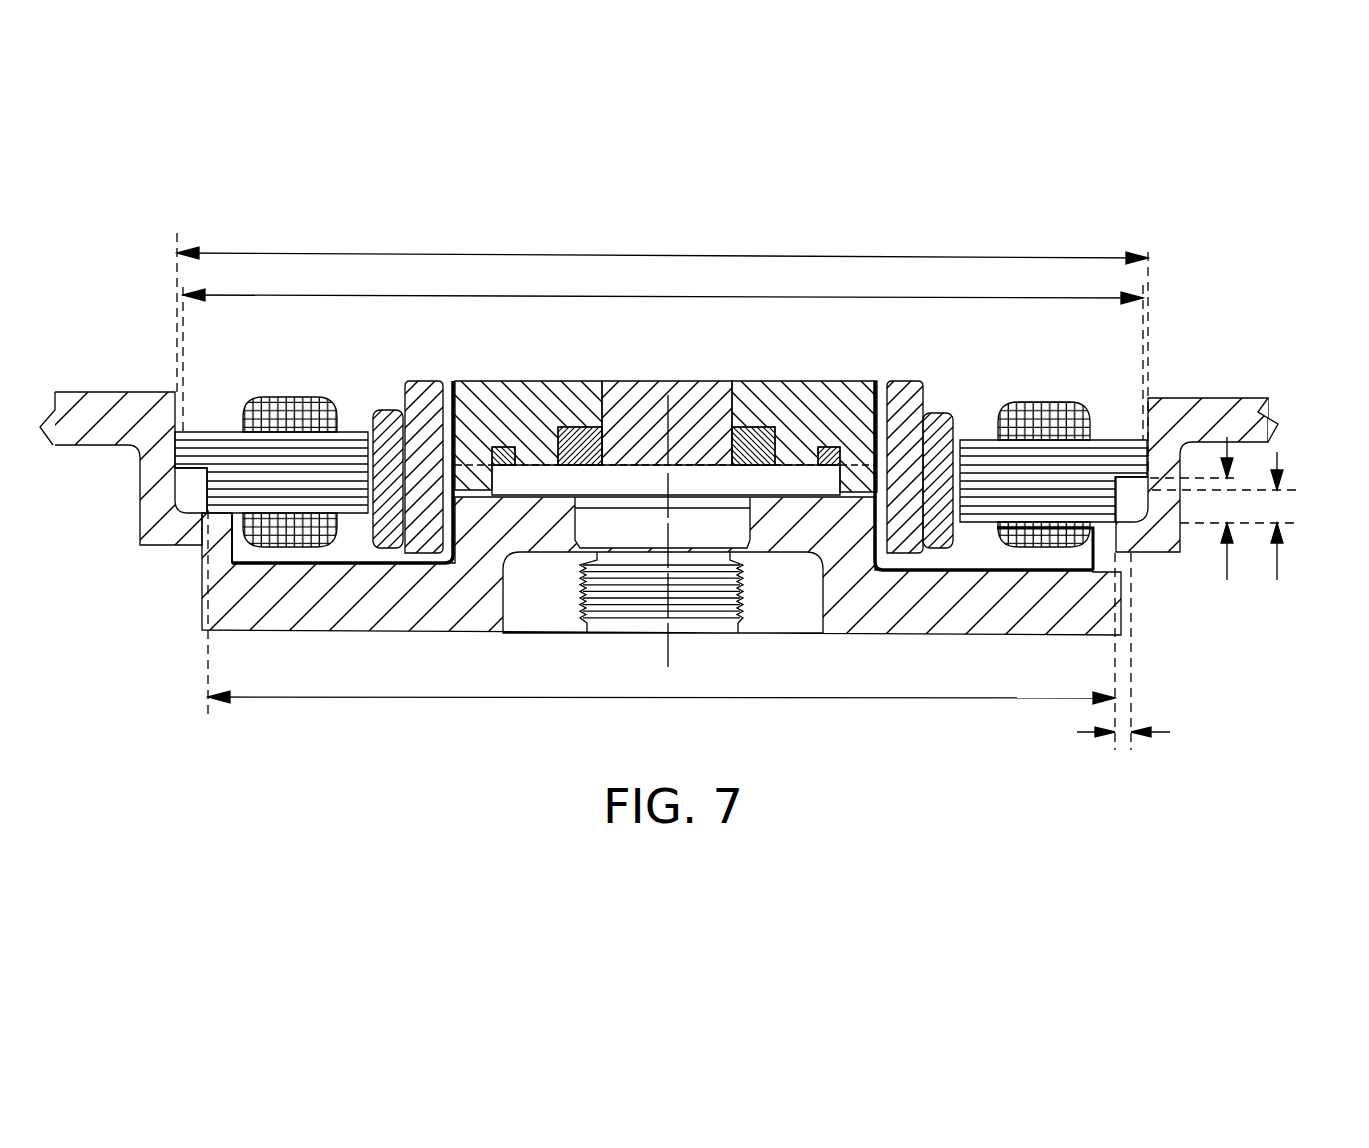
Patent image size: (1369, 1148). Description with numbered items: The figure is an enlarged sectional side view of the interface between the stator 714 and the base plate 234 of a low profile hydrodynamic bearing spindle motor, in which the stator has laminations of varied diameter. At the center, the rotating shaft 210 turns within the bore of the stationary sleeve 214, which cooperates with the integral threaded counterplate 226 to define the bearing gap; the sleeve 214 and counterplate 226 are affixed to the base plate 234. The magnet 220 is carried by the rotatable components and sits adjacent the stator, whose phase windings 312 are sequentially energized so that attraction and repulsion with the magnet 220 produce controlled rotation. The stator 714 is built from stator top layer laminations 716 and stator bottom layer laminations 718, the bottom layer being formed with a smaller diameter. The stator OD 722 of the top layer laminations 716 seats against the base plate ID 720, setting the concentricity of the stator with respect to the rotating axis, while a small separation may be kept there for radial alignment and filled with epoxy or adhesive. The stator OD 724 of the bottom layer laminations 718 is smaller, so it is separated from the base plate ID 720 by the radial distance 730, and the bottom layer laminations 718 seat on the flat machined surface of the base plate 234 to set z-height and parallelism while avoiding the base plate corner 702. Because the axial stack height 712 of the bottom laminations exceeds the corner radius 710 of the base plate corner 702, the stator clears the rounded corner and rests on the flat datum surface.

The base plate corner 702 is at (1143, 530).
The stator top layer laminations 716 is at (1138, 457).
The base plate 234 is at (946, 614).
The stator bottom layer laminations 718 is at (1093, 530).
The stator 714 is at (292, 381).
The phase windings 312 is at (1033, 410).
The magnet 220 is at (937, 413).
The sleeve 214 is at (775, 392).
The shaft 210 is at (627, 395).
The counterplate 226 is at (692, 489).
The base plate ID 720 is at (593, 256).
The stator OD of top layer laminations 722 is at (843, 297).
The stator OD of bottom layer laminations 724 is at (835, 698).
The radial distance 730 is at (1160, 733).
The axial stack height 712 is at (1226, 438).
The base plate corner radius 710 is at (1279, 462).